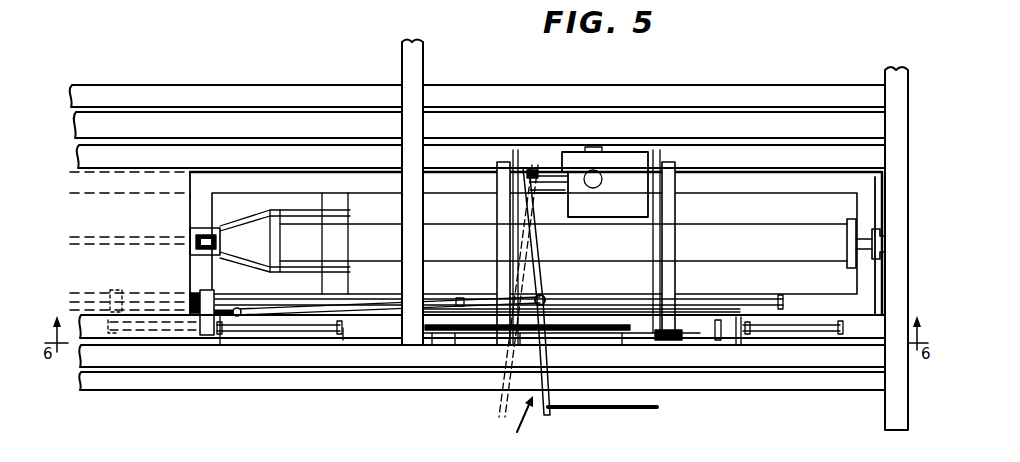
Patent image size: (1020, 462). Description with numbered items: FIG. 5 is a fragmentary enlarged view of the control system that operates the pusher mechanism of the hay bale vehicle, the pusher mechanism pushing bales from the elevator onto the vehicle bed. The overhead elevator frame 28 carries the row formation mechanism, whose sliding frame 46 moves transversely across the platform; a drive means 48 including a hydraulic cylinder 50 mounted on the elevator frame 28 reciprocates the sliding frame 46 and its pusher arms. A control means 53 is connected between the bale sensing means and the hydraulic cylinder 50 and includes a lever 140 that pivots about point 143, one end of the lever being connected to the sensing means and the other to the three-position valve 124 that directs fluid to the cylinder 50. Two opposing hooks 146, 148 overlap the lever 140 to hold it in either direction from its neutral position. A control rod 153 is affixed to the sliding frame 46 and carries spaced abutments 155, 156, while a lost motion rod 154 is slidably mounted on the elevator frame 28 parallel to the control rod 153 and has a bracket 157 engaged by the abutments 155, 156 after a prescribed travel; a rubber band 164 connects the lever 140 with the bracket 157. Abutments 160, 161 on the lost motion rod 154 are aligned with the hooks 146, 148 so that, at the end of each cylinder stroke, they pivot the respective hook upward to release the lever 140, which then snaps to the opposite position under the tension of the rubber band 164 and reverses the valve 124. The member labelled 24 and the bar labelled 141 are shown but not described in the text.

The frame 24 is at (767, 122).
The elevator frame 28 is at (290, 122).
The sliding frame 46 is at (313, 187).
The drive means 48 is at (789, 222).
The hydraulic cylinder 50 is at (745, 234).
The control means 53 is at (519, 423).
The three-position valve 124 is at (646, 183).
The lever 140 is at (548, 359).
The stop bar 141 is at (612, 412).
The pivot point 143 is at (525, 204).
The hook 146 is at (453, 334).
The hook 148 is at (582, 318).
The control rod 153 is at (228, 293).
The lost motion rod 154 is at (283, 333).
The abutment 155 is at (190, 296).
The abutment 156 is at (459, 298).
The bracket 157 is at (203, 320).
The abutment 160 is at (345, 338).
The abutment 161 is at (718, 340).
The rubber band 164 is at (352, 307).